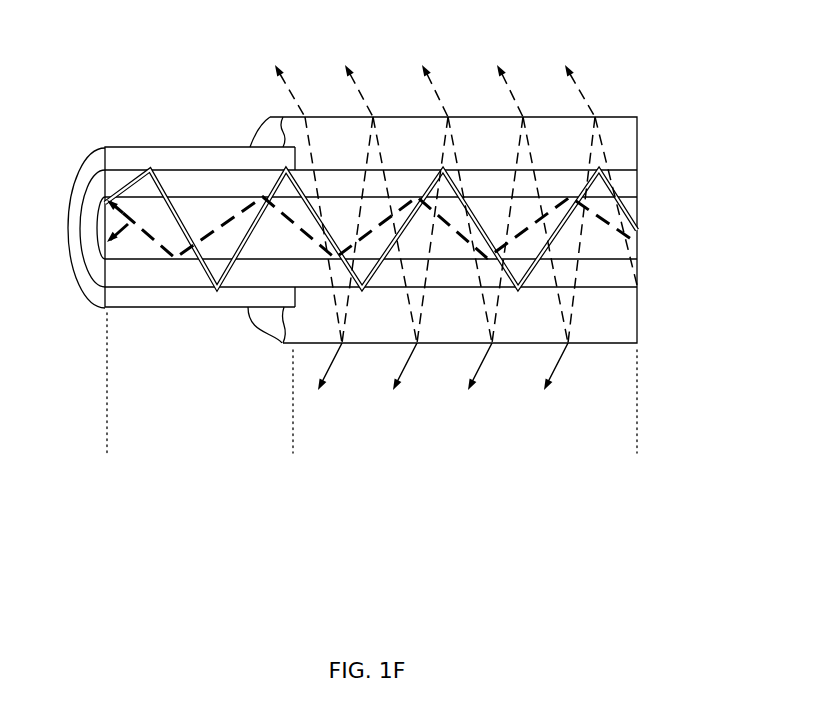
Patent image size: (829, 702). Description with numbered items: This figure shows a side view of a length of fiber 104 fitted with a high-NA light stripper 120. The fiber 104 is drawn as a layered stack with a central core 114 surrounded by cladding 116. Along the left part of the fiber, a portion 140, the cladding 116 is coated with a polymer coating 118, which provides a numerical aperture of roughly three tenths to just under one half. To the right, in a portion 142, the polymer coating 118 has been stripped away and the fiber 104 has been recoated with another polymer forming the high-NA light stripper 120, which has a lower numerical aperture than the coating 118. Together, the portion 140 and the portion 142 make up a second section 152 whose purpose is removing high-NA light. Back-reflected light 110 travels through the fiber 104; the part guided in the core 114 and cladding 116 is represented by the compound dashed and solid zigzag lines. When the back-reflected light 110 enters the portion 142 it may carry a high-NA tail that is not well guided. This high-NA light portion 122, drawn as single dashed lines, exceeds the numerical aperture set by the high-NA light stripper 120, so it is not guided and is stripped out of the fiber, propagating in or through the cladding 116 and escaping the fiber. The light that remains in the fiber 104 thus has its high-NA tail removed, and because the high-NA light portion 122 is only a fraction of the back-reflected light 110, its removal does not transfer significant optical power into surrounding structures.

The fiber 104 is at (128, 128).
The back-reflected light 110 is at (637, 228).
The core 114 is at (100, 243).
The cladding 116 is at (90, 200).
The polymer coating 118 is at (88, 163).
The high-NA light stripper 120 is at (264, 130).
The high-NA light portion 122 is at (267, 62).
The portion 140 is at (107, 457).
The portion 142 is at (637, 456).
The second section 152 is at (637, 552).